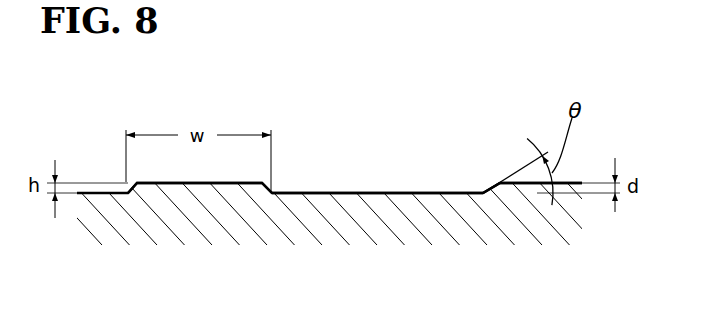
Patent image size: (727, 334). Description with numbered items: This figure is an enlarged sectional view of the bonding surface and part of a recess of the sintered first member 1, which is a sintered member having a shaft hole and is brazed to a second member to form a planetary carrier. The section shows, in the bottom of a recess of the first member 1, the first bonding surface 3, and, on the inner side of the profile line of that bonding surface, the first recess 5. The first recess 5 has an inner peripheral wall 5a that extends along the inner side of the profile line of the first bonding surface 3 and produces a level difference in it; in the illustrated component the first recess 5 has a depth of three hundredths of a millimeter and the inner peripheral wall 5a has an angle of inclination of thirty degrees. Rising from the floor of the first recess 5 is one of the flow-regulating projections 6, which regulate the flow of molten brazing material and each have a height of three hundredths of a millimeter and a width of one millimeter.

The first member 1 is at (437, 233).
The first bonding surface 3 is at (567, 183).
The first recess 5 is at (400, 191).
The inner peripheral wall 5a is at (488, 190).
The flow-regulating projection 6 is at (200, 190).